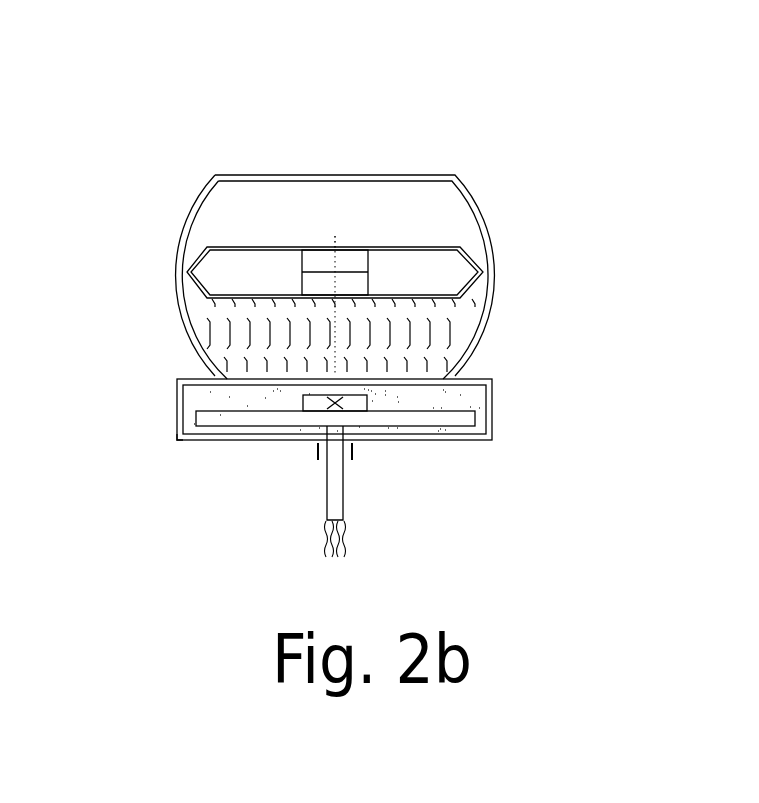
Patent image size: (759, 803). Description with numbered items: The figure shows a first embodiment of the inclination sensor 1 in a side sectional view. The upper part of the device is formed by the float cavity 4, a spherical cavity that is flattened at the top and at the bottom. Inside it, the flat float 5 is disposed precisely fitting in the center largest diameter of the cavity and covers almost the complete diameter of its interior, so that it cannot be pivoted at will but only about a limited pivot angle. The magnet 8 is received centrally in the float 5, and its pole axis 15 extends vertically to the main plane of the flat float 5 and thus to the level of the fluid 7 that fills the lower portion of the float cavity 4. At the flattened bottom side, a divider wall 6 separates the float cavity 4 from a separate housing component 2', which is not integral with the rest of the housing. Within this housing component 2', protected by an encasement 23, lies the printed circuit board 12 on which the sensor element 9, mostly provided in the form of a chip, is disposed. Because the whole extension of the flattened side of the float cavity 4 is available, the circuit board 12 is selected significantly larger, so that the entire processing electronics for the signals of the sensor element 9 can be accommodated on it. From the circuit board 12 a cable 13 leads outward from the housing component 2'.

The inclination sensor 1 is at (195, 140).
The float cavity 4 is at (490, 247).
The float 5 is at (467, 287).
The magnet 8 is at (353, 283).
The pole axis 15 is at (335, 243).
The fluid 7 is at (453, 327).
The divider wall 6 is at (218, 378).
The housing component 2' is at (158, 457).
The encasement 23 is at (465, 399).
The circuit board 12 is at (453, 423).
The sensor element 9 is at (348, 403).
The cable 13 is at (335, 503).